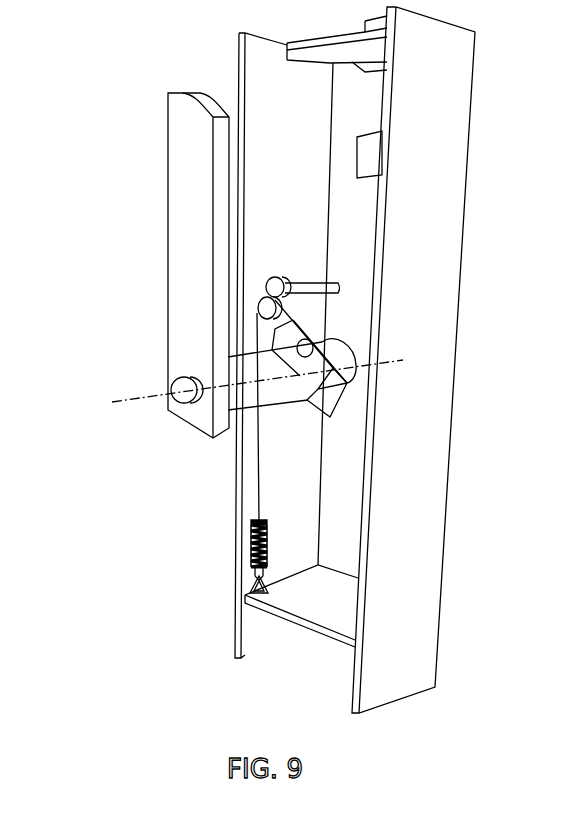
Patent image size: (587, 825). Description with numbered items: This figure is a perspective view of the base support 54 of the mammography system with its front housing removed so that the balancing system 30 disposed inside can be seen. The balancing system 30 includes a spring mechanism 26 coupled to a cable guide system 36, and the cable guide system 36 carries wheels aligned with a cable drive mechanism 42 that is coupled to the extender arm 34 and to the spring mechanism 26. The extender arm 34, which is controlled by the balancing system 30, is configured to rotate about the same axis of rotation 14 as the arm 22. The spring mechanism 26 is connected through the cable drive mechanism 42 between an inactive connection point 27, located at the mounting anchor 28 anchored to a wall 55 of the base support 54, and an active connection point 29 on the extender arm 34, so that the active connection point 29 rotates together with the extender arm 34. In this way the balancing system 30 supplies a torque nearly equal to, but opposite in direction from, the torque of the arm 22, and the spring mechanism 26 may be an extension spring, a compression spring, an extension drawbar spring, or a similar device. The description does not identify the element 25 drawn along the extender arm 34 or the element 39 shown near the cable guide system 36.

The base support 54 is at (78, 127).
The wall 55 is at (332, 608).
The arm 22 is at (168, 177).
The axis of rotation 14 is at (115, 393).
The balancing system 30 is at (220, 473).
The shaft 25 is at (285, 403).
The extender arm 34 is at (352, 398).
The cable guide system 36 is at (355, 295).
The active connection point 29 is at (308, 342).
The pin with rollers 39 is at (262, 280).
The cable drive mechanism 42 is at (260, 472).
The spring mechanism 26 is at (248, 537).
The inactive connection point 27 is at (262, 575).
The mounting anchor 28 is at (252, 582).